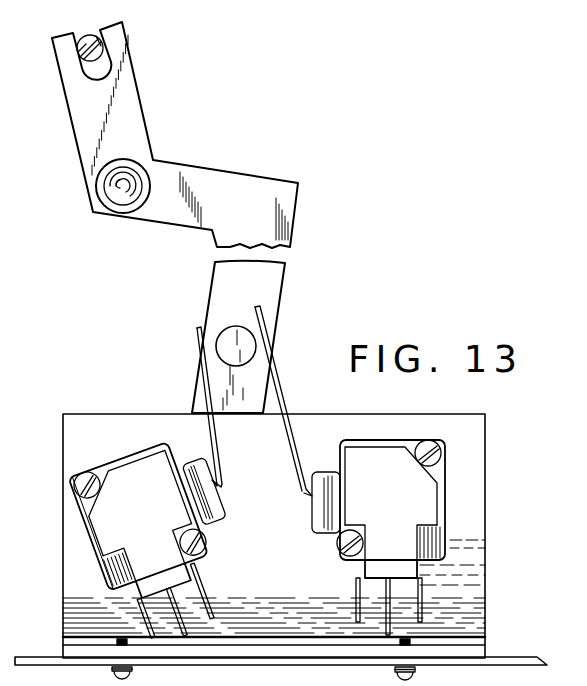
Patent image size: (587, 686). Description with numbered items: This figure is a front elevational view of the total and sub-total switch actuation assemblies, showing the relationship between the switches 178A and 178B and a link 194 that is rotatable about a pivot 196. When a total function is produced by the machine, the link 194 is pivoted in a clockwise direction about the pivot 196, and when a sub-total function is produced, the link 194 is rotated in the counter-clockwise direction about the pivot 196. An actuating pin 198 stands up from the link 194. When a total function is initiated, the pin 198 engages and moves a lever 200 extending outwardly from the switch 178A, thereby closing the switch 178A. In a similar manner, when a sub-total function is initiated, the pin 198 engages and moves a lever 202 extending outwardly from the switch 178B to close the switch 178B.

The switch 178A is at (163, 543).
The switch 178B is at (408, 503).
The link 194 is at (286, 266).
The pivot 196 is at (108, 192).
The actuating pin 198 is at (229, 327).
The lever 200 is at (198, 355).
The lever 202 is at (262, 323).